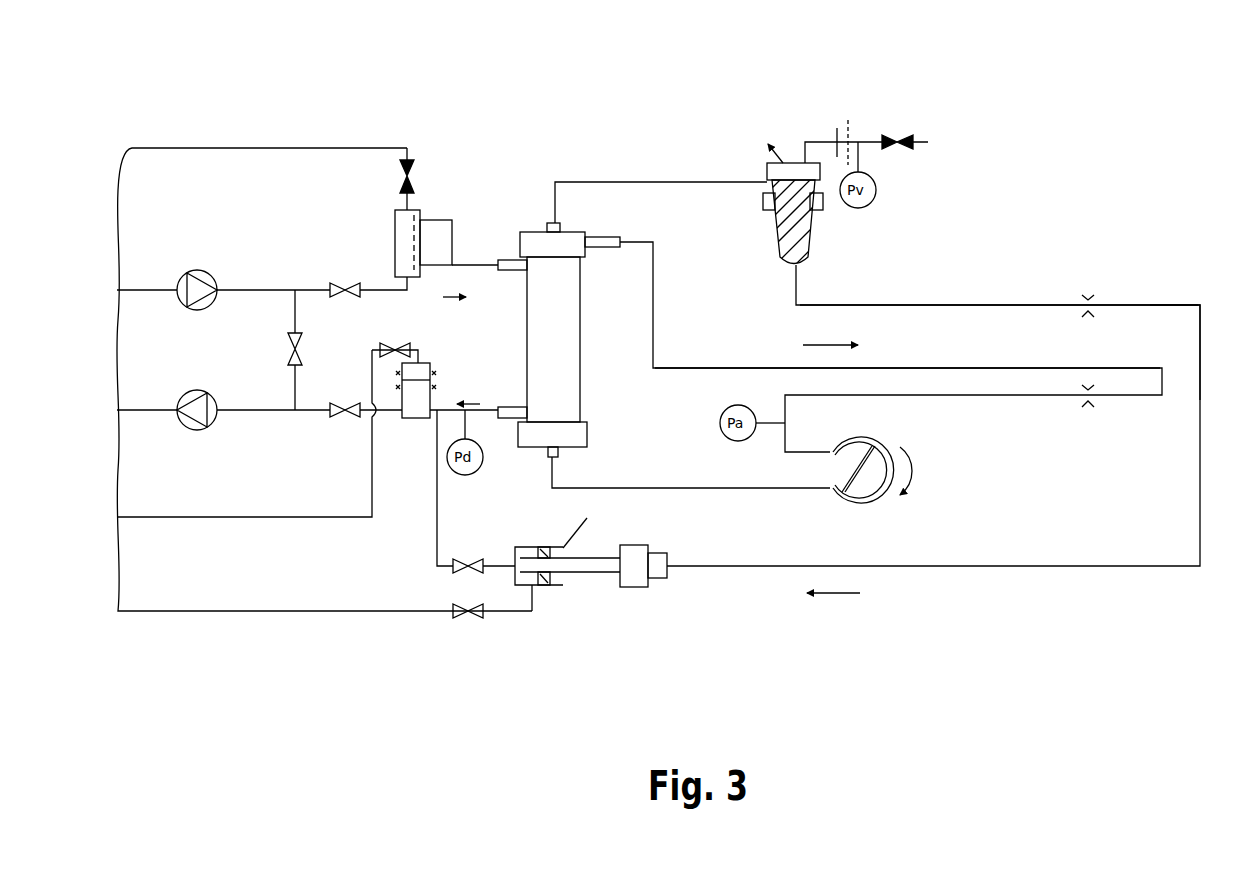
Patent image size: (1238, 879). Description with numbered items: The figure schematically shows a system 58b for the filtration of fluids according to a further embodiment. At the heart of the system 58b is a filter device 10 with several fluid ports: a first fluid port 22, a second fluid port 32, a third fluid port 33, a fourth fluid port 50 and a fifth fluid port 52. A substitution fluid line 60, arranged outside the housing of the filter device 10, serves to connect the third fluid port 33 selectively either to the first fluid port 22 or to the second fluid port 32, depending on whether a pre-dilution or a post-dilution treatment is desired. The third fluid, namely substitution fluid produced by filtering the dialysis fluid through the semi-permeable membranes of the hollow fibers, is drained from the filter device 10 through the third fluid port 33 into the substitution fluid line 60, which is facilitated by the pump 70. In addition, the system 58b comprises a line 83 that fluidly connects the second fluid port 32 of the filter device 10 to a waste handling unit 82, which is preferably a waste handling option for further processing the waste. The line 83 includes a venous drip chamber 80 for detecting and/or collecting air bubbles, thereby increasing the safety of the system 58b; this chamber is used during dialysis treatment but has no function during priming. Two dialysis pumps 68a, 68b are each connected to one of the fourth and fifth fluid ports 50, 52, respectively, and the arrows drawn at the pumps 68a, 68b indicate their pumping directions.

The filter device 10 is at (514, 211).
The first fluid port 22 is at (558, 452).
The second fluid port 32 is at (558, 228).
The third fluid port 33 is at (587, 250).
The fourth fluid port 50 is at (508, 273).
The fifth fluid port 52 is at (508, 420).
The system 58b is at (1041, 168).
The substitution fluid line 60 is at (700, 366).
The dialysis pump 68a is at (195, 268).
The dialysis pump 68b is at (197, 432).
The pump 70 is at (870, 505).
The venous drip chamber 80 is at (762, 114).
The waste handling unit 82 is at (569, 606).
The line 83 is at (1160, 303).